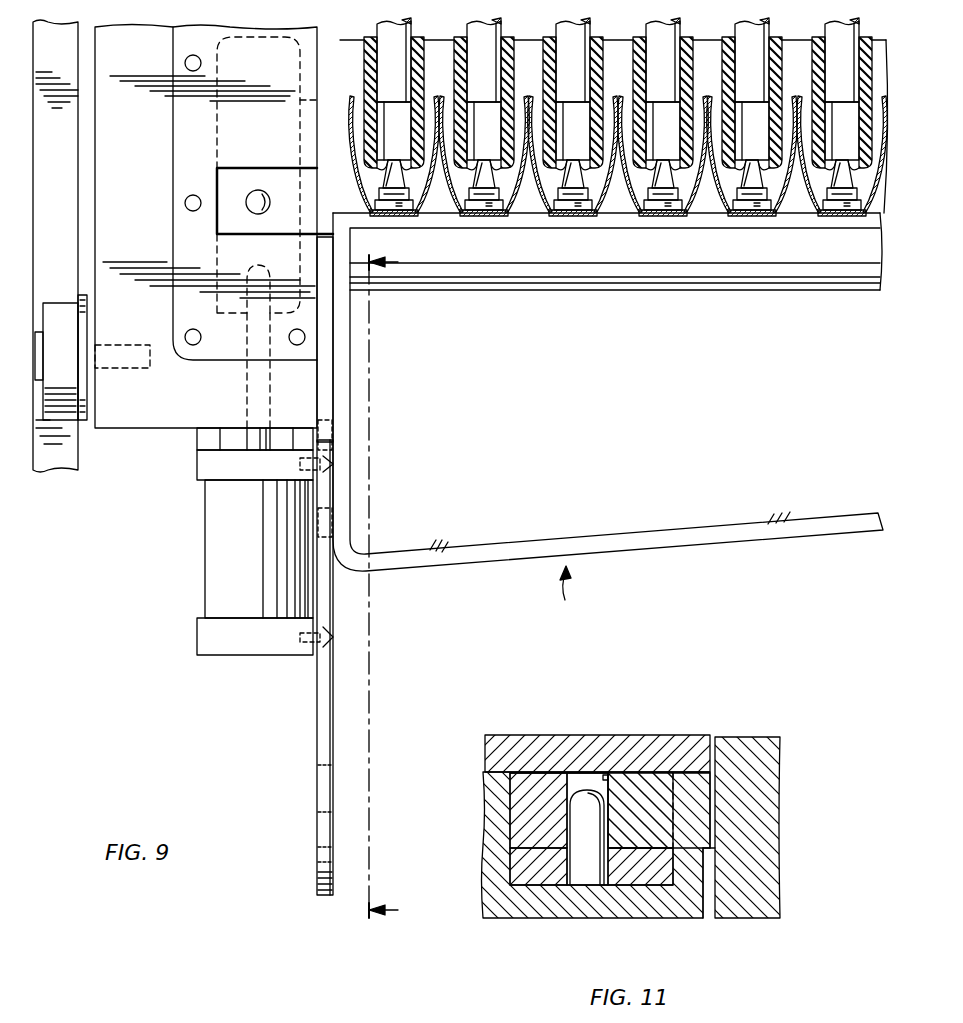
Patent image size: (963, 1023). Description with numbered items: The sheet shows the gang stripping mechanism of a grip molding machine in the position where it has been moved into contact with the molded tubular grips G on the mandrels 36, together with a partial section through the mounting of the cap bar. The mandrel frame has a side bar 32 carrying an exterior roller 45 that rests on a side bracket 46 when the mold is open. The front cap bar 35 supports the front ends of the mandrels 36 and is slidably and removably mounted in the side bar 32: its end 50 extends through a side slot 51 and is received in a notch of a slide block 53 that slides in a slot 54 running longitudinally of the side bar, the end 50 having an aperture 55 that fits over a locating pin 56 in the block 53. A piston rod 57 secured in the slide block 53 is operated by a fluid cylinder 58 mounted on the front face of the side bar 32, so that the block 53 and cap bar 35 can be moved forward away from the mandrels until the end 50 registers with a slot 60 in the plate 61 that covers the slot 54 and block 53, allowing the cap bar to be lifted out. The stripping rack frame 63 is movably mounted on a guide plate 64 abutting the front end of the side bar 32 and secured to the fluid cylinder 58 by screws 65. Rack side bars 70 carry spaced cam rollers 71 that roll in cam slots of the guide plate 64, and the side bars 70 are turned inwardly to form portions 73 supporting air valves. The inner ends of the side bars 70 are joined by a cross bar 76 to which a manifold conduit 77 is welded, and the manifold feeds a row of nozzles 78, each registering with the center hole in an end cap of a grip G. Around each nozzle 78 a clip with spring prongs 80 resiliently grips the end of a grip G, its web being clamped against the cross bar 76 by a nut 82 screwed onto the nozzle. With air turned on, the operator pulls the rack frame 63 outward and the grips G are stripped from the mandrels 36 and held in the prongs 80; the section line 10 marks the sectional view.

In FIG. 9, the section line 10- 10 is at (388, 589).
In FIG. 9, the side bar 32 is at (140, 214).
In FIG. 11, the side bar 32 is at (588, 905).
In FIG. 11, the front cap bar 35 is at (770, 877).
In FIG. 9, the mandrel 36 is at (567, 75).
In FIG. 9, the exterior roller 45 is at (72, 395).
In FIG. 9, the side bracket 46 is at (63, 193).
In FIG. 11, the cap bar end 50 is at (522, 827).
In FIG. 9, the side slot 51 is at (306, 235).
In FIG. 11, the side slot 51 is at (700, 850).
In FIG. 11, the slide block 53 is at (512, 872).
In FIG. 9, the slot 54 is at (222, 112).
In FIG. 11, the slot 54 is at (660, 877).
In FIG. 11, the aperture 55 is at (603, 777).
In FIG. 9, the locating pin 56 is at (246, 200).
In FIG. 11, the locating pin 56 is at (582, 880).
In FIG. 9, the piston rod 57 is at (250, 437).
In FIG. 9, the fluid cylinder 58 is at (215, 543).
In FIG. 9, the slot 60 is at (245, 170).
In FIG. 9, the plate 61 is at (190, 237).
In FIG. 11, the plate 61 is at (585, 743).
In FIG. 9, the rack frame 63 is at (581, 592).
In FIG. 9, the guide plate 64 is at (320, 720).
In FIG. 9, the screw 65 is at (333, 637).
In FIG. 9, the rack side bar 70 is at (350, 397).
In FIG. 9, the cam roller 71 is at (332, 518).
In FIG. 9, the inturned portion 73 is at (666, 545).
In FIG. 9, the cross bar 76 is at (625, 222).
In FIG. 9, the manifold conduit 77 is at (727, 280).
In FIG. 9, the nozzle 78 is at (490, 200).
In FIG. 9, the spring prong 80 is at (450, 192).
In FIG. 9, the nut 82 is at (580, 205).
In FIG. 9, the tubular grip G is at (640, 53).